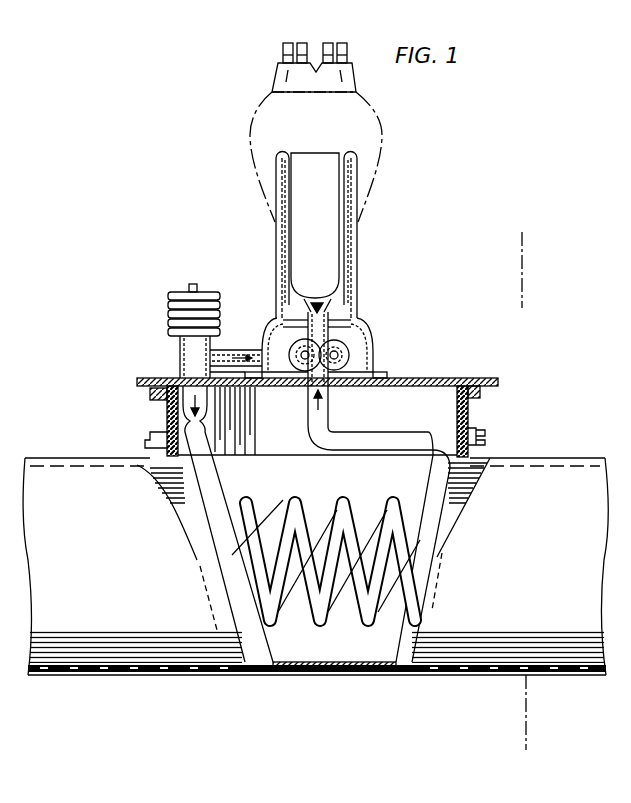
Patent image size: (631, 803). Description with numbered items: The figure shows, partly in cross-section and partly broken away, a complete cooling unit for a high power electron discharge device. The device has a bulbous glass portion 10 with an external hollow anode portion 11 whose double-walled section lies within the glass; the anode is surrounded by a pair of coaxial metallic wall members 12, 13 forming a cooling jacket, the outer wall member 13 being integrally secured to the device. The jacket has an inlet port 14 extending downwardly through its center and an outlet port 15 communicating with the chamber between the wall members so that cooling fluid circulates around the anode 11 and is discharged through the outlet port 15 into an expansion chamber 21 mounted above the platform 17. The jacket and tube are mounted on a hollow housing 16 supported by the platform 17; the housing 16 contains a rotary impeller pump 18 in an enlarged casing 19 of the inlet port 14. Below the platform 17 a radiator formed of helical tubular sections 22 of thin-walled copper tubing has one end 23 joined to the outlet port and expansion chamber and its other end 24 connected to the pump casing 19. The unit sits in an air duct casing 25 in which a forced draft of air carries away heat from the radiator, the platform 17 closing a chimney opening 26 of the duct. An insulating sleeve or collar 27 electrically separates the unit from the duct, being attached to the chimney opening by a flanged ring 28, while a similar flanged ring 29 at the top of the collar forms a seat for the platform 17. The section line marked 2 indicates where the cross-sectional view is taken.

The section line 2- 2 is at (528, 246).
The bulbous glass portion 10 is at (368, 118).
The external hollow anode portion 11 is at (339, 263).
The coaxial metallic wall member 12 is at (350, 271).
The coaxial metallic wall member 13 is at (358, 292).
The inlet port 14 is at (336, 321).
The outlet port 15 is at (275, 333).
The hollow housing 16 is at (375, 346).
The platform 17 is at (426, 378).
The rotary impeller pump 18 is at (340, 349).
The enlarged casing 19 is at (349, 358).
The expansion chamber 21 is at (168, 318).
The helical tubular sections 22 is at (362, 612).
The radiator end 23 is at (190, 491).
The radiator end 24 is at (322, 421).
The air duct casing 25 is at (150, 650).
The chimney opening 26 is at (231, 400).
The insulating sleeve or collar 27 is at (470, 416).
The flanged ring 28 is at (483, 438).
The flanged ring 29 is at (480, 394).